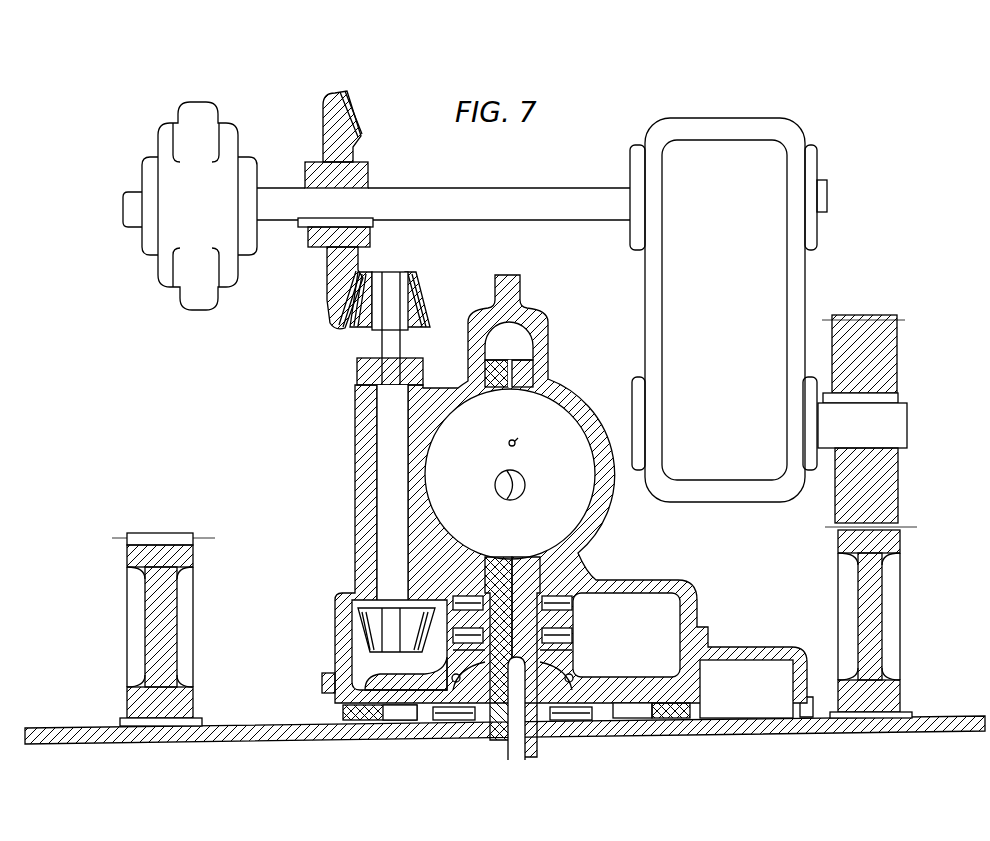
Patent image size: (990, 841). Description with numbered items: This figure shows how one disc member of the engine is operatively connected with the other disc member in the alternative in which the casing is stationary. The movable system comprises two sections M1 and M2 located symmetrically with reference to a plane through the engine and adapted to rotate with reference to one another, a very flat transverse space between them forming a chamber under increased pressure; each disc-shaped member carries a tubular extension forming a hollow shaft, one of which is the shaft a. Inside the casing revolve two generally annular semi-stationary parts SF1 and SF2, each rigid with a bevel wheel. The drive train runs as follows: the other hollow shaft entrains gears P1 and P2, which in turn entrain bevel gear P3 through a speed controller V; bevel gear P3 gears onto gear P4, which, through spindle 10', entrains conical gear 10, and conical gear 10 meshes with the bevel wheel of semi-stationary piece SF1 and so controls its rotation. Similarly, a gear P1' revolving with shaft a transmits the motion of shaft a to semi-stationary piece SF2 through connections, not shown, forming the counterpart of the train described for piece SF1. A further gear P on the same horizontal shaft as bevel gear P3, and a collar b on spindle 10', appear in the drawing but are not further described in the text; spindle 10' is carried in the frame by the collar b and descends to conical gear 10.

The hollow shaft a is at (505, 741).
The gear P is at (163, 233).
The gear P1 is at (880, 622).
The gear P1' is at (136, 629).
The gear P2 is at (873, 384).
The bevel gear P3 is at (356, 166).
The gear P4 is at (407, 294).
The movable section M1 is at (492, 368).
The movable section M2 is at (526, 374).
The collar b is at (358, 370).
The conical gear 10 is at (356, 630).
The spindle 10' is at (355, 462).
The speed controller V is at (728, 310).
The semi-stationary part SF1 is at (427, 627).
The semi-stationary part SF2 is at (594, 618).